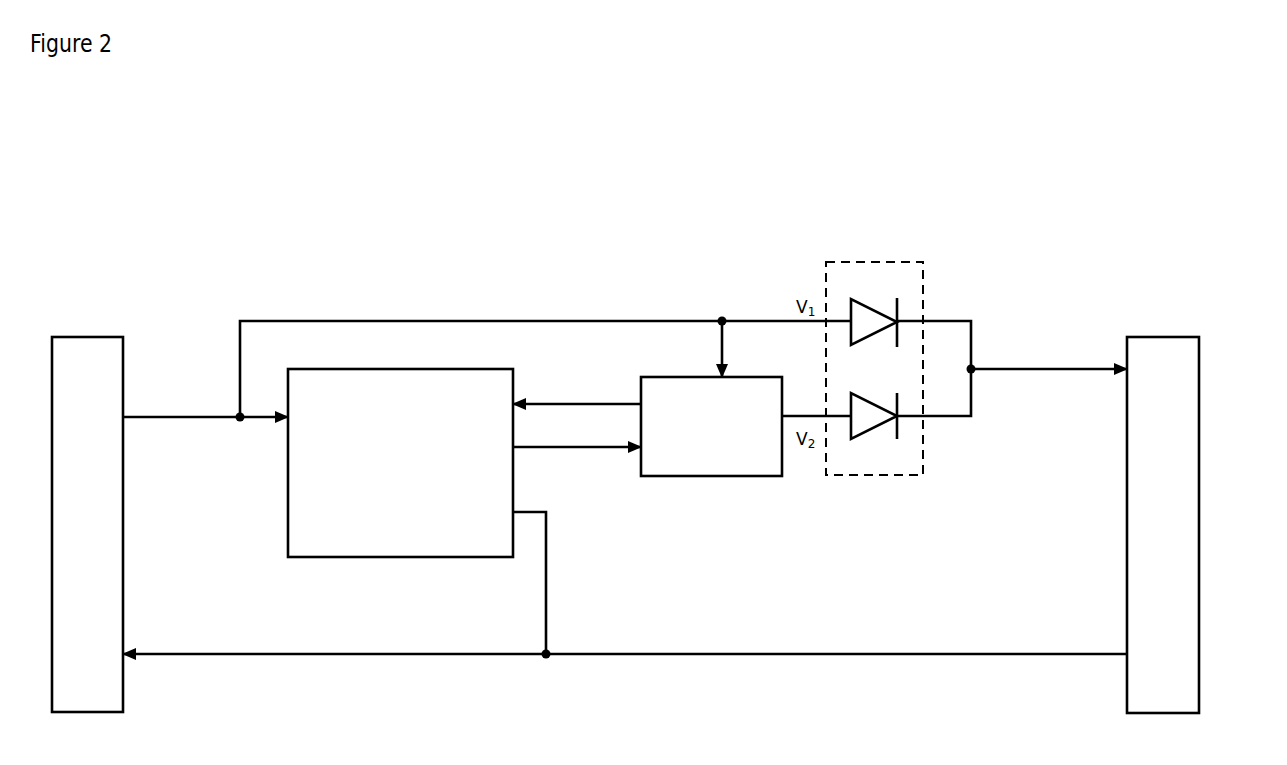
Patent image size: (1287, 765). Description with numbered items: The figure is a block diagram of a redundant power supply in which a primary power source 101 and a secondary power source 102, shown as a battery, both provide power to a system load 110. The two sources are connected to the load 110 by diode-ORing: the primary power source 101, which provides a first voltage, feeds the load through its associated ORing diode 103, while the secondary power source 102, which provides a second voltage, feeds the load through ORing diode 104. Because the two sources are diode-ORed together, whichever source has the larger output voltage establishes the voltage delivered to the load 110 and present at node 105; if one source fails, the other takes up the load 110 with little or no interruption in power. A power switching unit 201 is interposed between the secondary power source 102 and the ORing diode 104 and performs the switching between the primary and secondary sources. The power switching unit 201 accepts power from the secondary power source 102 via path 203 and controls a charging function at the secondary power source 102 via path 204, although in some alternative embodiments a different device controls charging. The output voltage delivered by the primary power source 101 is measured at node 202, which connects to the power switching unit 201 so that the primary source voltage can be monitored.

The primary power source 101 is at (108, 337).
The secondary power source 102 is at (473, 369).
The ORing diode 103 is at (862, 298).
The ORing diode 104 is at (862, 439).
The node 105 is at (971, 369).
The system load 110 is at (1183, 337).
The power switching unit 201 is at (747, 377).
The node 202 is at (722, 321).
The path 203 is at (562, 447).
The path 204 is at (563, 404).